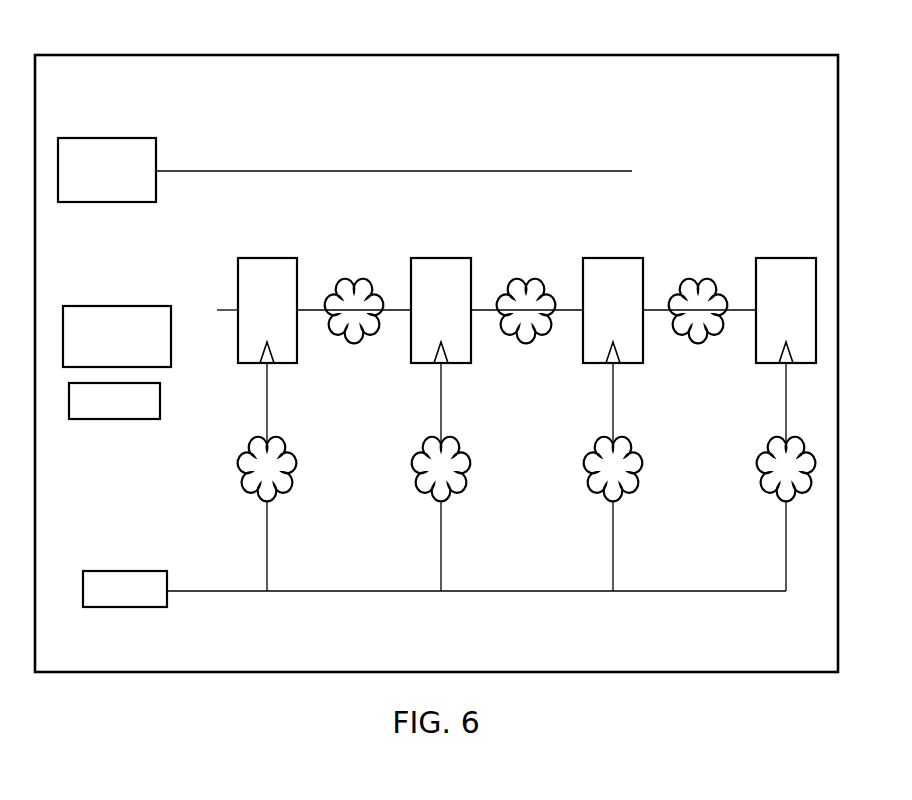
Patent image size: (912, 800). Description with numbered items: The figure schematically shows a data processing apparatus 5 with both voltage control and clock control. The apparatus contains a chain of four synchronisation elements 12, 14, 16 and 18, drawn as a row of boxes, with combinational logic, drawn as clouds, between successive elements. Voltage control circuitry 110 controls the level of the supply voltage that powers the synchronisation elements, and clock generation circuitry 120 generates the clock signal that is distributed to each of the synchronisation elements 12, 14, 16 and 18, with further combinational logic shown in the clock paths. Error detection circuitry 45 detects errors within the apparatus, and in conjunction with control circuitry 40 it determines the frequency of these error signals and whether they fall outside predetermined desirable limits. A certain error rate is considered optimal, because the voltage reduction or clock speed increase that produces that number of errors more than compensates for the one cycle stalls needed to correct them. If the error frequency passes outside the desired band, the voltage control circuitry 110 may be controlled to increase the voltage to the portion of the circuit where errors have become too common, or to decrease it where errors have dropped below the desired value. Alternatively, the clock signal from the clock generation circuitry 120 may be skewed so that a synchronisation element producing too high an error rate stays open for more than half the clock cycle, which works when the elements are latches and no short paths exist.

The data processing apparatus 5 is at (790, 55).
The voltage control circuitry 110 is at (108, 138).
The error detection circuitry 45 is at (120, 306).
The control circuitry 40 is at (117, 420).
The clock generation circuitry 120 is at (127, 608).
The synchronisation element 12 is at (269, 258).
The synchronisation element 14 is at (442, 258).
The synchronisation element 16 is at (615, 258).
The synchronisation element 18 is at (788, 258).